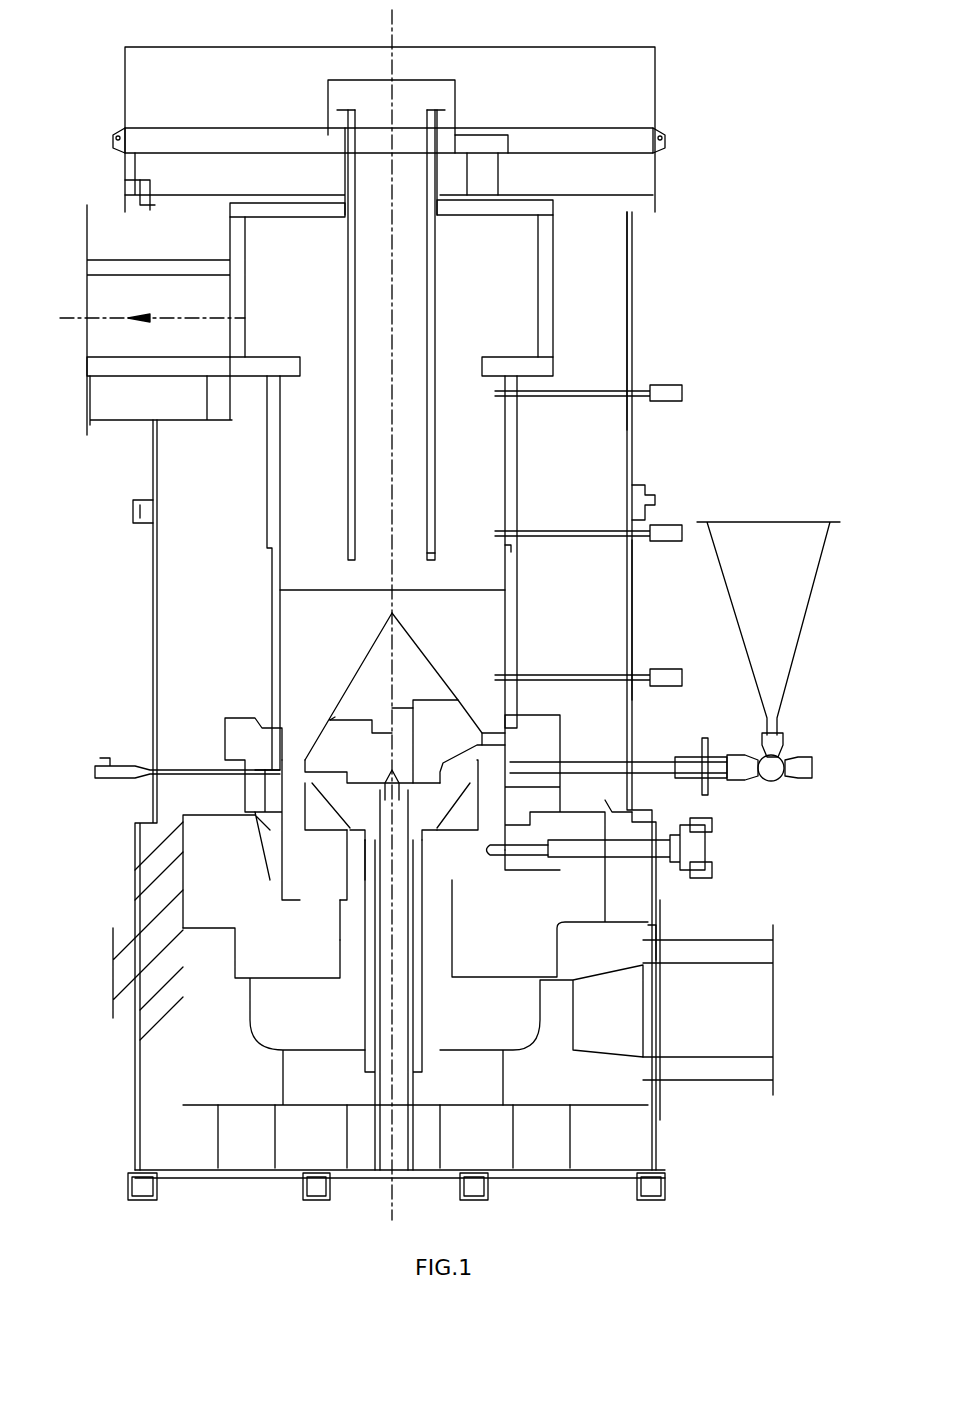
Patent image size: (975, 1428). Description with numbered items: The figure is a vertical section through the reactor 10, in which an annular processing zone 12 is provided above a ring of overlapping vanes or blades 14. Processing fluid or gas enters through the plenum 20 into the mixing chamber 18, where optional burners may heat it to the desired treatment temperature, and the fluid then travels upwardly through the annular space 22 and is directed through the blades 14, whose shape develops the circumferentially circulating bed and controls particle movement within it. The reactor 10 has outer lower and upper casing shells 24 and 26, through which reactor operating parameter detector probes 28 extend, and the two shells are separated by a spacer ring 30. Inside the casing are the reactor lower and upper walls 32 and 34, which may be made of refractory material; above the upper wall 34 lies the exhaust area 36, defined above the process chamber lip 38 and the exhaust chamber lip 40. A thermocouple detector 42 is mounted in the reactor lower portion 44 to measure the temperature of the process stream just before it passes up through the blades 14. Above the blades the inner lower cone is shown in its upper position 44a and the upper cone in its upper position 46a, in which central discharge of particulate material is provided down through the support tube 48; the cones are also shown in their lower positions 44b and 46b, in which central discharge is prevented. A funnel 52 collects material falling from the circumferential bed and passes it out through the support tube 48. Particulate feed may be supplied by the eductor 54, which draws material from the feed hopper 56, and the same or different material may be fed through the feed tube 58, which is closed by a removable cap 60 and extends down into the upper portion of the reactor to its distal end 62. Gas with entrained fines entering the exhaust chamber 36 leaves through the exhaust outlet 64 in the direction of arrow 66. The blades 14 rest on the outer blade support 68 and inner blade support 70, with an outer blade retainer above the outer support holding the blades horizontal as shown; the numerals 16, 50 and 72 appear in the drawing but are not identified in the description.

The reactor 10 is at (640, 317).
The annular processing zone 12 is at (495, 758).
The vanes 14 is at (513, 778).
The support feet 16 is at (643, 1183).
The mixing chamber 18 is at (480, 1035).
The plenum 20 is at (747, 1060).
The annular space 22 is at (452, 950).
The lower casing shell 24 is at (632, 612).
The upper casing shell 26 is at (643, 442).
The reactor operating parameter detector probes 28 is at (655, 386).
The spacer ring 30 is at (645, 500).
The reactor lower wall 32 is at (520, 628).
The reactor upper wall 34 is at (520, 460).
The exhaust area 36 is at (553, 278).
The process chamber lip 38 is at (553, 368).
The exhaust chamber lip 40 is at (550, 210).
The thermocouple detector 42 is at (707, 857).
The reactor lower portion 44 is at (655, 813).
The lower cone upper position 44a is at (457, 725).
The lower cone lower position 44b is at (320, 755).
The upper cone upper position 46a is at (418, 667).
The upper cone lower position 46b is at (358, 688).
The support tube 48 is at (430, 1018).
The nozzle tube 50 is at (372, 855).
The funnel 52 is at (368, 870).
The eductor 54 is at (817, 763).
The feed hopper 56 is at (805, 583).
The feed tube 58 is at (432, 267).
The removable cap 60 is at (457, 98).
The distal end 62 is at (430, 557).
The exhaust outlet 64 is at (105, 265).
The arrow 66 is at (152, 307).
The outer blade support 68 is at (273, 970).
The inner blade support 70 is at (310, 833).
The probe block 72 is at (233, 755).